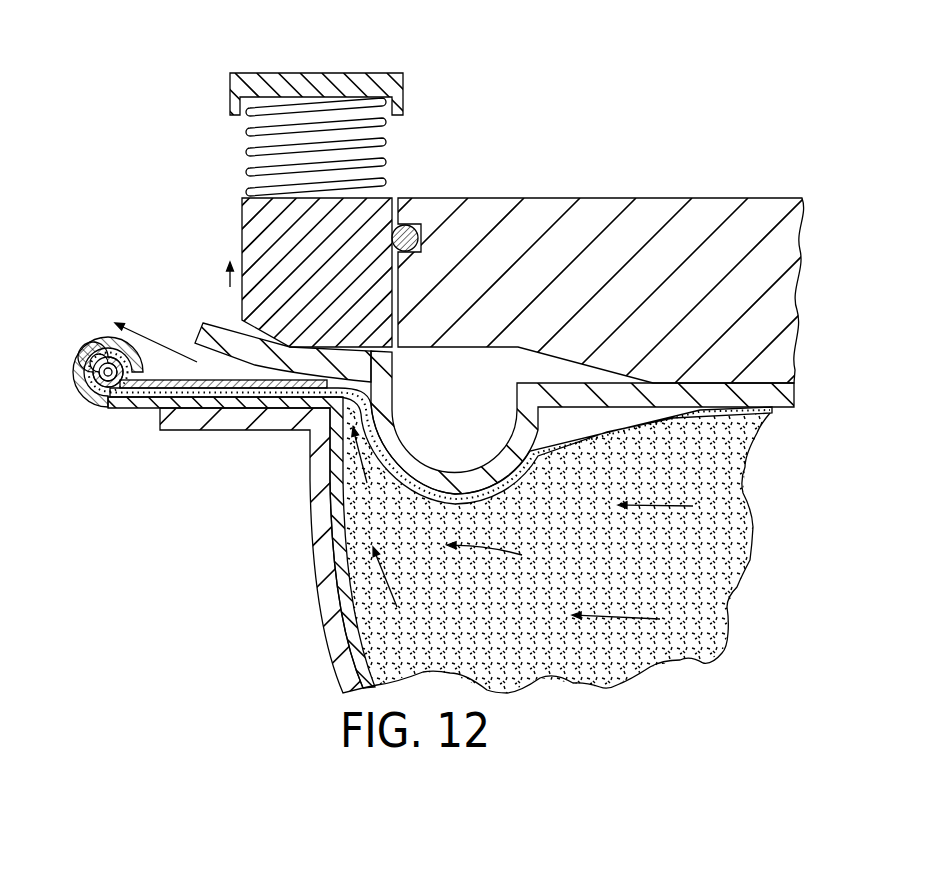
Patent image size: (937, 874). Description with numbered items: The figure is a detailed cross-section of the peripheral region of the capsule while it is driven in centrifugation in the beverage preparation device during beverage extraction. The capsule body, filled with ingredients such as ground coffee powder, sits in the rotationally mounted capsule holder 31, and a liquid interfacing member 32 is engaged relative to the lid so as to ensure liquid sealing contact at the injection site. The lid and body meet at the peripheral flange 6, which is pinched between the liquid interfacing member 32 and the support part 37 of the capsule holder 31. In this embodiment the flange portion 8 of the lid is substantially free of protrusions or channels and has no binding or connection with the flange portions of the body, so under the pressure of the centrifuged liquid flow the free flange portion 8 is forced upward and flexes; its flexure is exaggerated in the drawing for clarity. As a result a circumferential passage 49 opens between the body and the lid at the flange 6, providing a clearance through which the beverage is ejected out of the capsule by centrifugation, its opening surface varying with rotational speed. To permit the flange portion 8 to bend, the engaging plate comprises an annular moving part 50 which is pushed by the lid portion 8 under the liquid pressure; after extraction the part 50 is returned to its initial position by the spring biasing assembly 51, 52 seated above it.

The flange 6 is at (66, 336).
The flange portion of the lid 8 is at (200, 340).
The capsule holder 31 is at (183, 583).
The liquid interfacing member 32 is at (757, 183).
The support part 37 is at (178, 428).
The circumferential passage 49 is at (298, 392).
The annular moving part 50 is at (246, 214).
The spring biasing assembly 51 is at (250, 155).
The spring biasing assembly 52 is at (383, 80).